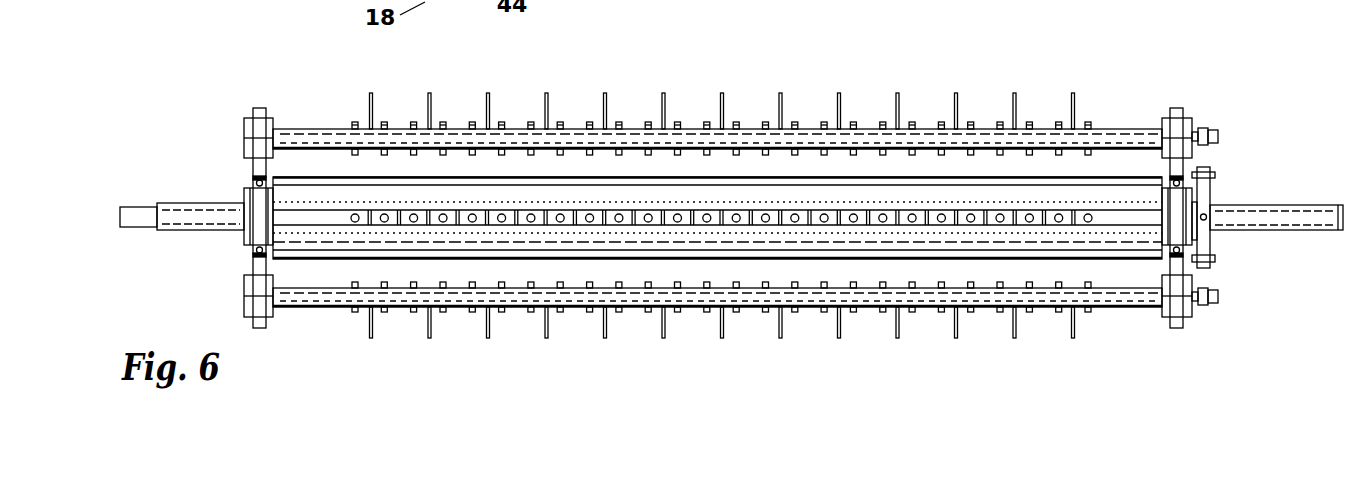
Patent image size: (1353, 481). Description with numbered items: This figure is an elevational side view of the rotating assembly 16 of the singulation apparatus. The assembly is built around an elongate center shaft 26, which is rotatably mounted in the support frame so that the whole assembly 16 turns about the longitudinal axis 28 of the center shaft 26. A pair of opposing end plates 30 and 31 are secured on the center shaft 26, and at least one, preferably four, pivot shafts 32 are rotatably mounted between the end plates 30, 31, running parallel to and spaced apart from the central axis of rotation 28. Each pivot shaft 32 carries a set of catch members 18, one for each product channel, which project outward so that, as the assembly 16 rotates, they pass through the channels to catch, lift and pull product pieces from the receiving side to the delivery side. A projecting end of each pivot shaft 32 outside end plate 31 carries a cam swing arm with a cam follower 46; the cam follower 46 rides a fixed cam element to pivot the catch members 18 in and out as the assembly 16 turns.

The rotating assembly 16 is at (1137, 98).
The catch members 18 is at (488, 104).
The center shaft 26 is at (170, 215).
The longitudinal axis 28 is at (1262, 213).
The end plate 30 is at (252, 166).
The end plate 31 is at (1170, 267).
The pivot shafts 32 is at (805, 132).
The cam follower 46 is at (1217, 128).